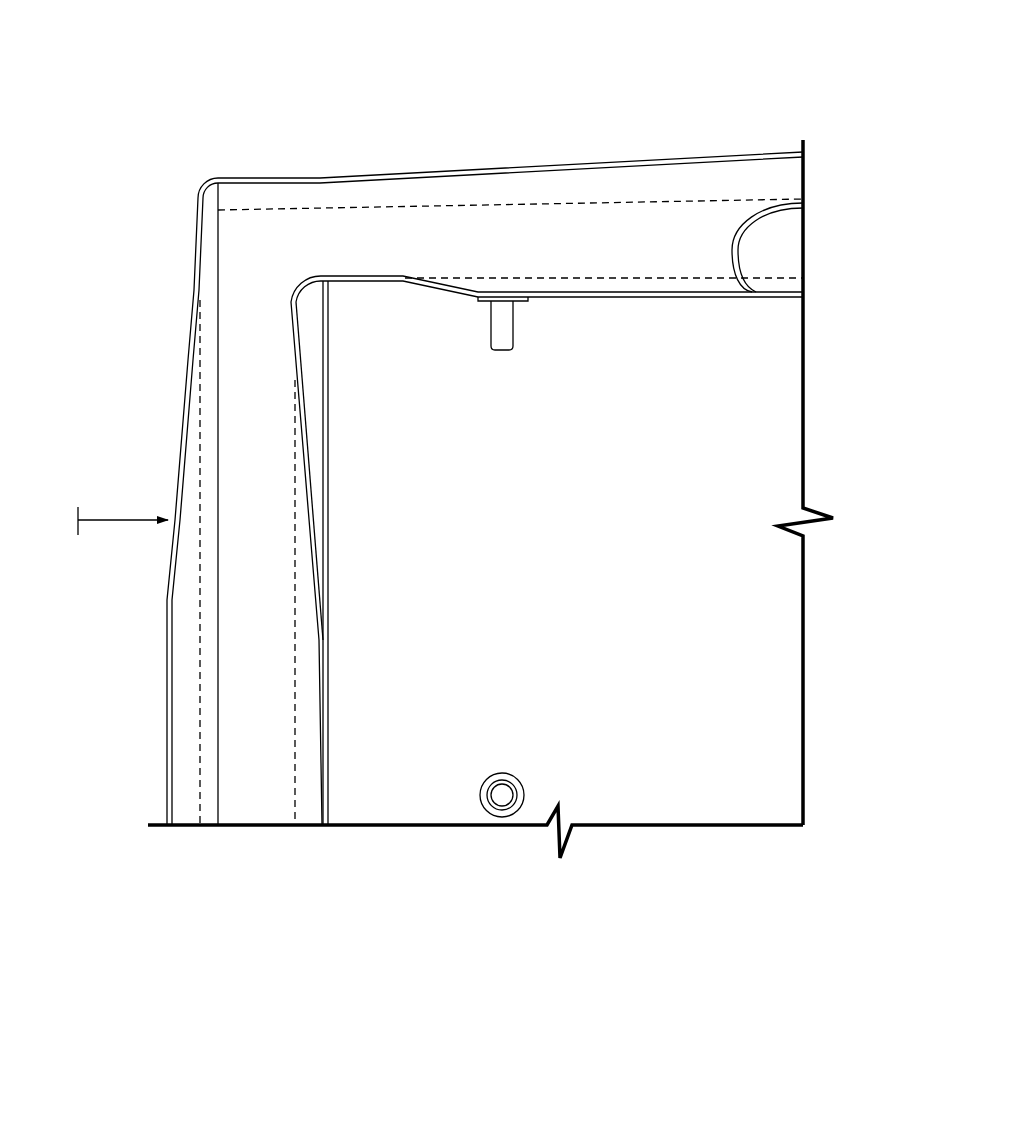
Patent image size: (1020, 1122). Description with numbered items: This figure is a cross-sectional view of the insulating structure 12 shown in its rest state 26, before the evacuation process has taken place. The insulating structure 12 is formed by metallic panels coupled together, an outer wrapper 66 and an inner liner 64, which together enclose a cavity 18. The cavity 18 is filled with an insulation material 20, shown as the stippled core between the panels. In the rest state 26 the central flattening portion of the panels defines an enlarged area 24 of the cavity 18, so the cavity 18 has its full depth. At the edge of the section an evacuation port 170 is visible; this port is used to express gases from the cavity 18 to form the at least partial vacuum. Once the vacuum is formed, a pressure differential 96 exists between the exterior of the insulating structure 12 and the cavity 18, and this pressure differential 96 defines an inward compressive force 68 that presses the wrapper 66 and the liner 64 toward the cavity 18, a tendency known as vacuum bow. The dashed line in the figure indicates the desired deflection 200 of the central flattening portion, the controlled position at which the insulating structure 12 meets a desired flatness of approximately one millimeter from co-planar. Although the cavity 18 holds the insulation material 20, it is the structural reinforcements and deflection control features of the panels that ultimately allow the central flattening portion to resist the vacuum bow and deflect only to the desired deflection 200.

The insulating structure 12 is at (135, 110).
The cavity 18 is at (747, 185).
The insulation material 20 is at (397, 247).
The enlarged area 24 is at (654, 193).
The rest state 26 is at (147, 757).
The liner 64 is at (662, 297).
The wrapper 66 is at (500, 167).
The inward compressive force 68 is at (77, 513).
The pressure differential 96 is at (167, 718).
The evacuation port 170 is at (743, 241).
The desired deflection 200 is at (577, 205).